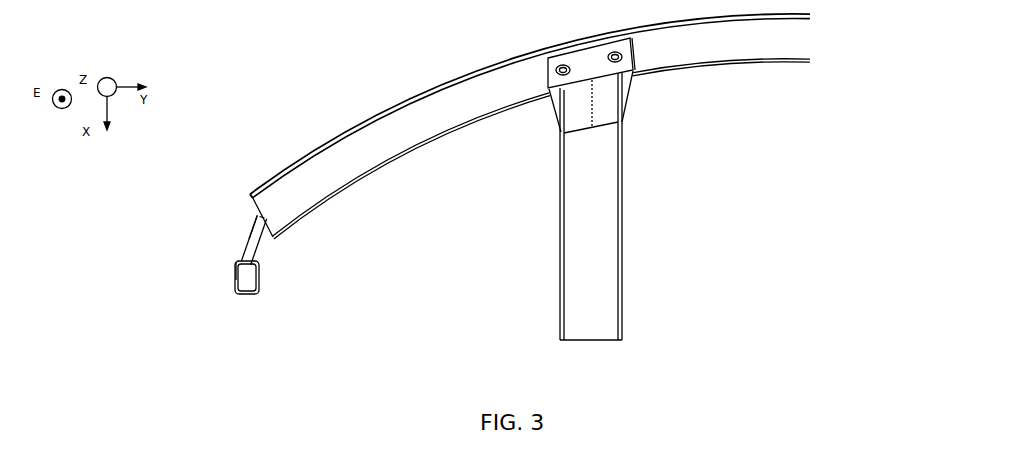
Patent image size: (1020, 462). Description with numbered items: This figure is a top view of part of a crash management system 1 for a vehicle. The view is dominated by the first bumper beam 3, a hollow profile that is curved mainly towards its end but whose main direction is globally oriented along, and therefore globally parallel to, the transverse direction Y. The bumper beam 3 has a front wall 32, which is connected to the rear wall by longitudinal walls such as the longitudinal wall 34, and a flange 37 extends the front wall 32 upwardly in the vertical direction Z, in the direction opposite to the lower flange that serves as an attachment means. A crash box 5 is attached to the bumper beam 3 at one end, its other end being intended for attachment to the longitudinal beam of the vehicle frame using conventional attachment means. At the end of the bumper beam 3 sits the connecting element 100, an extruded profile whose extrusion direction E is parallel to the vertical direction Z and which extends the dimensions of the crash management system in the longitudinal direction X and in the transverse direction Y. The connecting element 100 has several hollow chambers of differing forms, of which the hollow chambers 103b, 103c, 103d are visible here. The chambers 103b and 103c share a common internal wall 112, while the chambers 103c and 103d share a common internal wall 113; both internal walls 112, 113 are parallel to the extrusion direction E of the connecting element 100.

The crash management system 1 is at (311, 53).
The first bumper beam 3 is at (810, 41).
The crash box 5 is at (608, 177).
The front wall 32 is at (304, 143).
The longitudinal wall 34 is at (486, 84).
The flange 37 is at (412, 86).
The connecting element 100 is at (221, 293).
The hollow chamber 103b is at (247, 220).
The hollow chamber 103c is at (241, 242).
The hollow chamber 103d is at (233, 264).
The common internal wall 112 is at (276, 235).
The common internal wall 113 is at (266, 265).